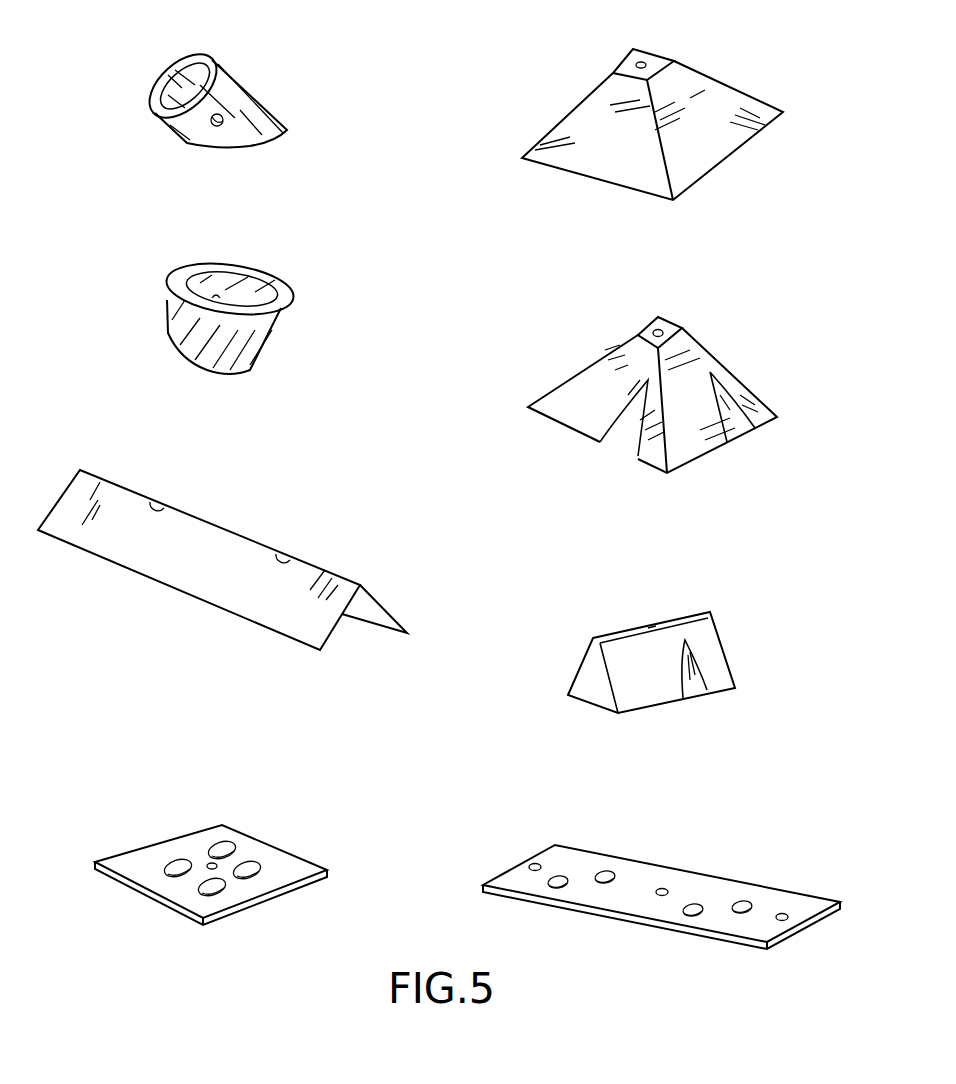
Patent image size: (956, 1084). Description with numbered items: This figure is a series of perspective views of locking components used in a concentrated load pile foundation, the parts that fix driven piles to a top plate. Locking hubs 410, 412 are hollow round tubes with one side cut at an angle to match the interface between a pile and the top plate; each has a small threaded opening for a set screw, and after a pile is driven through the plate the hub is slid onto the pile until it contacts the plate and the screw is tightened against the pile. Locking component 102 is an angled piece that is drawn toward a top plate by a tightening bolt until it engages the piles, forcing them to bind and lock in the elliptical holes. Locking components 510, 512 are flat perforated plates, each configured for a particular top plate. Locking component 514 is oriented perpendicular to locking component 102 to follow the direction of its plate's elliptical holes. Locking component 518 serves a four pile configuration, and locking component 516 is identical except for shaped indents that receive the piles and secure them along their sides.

The locking hub 410 is at (257, 97).
The locking hub 412 is at (277, 325).
The locking component 518 is at (728, 83).
The locking component 516 is at (707, 347).
The locking component 102 is at (382, 605).
The locking component 514 is at (725, 635).
The locking component 510 is at (302, 860).
The locking component 512 is at (773, 888).